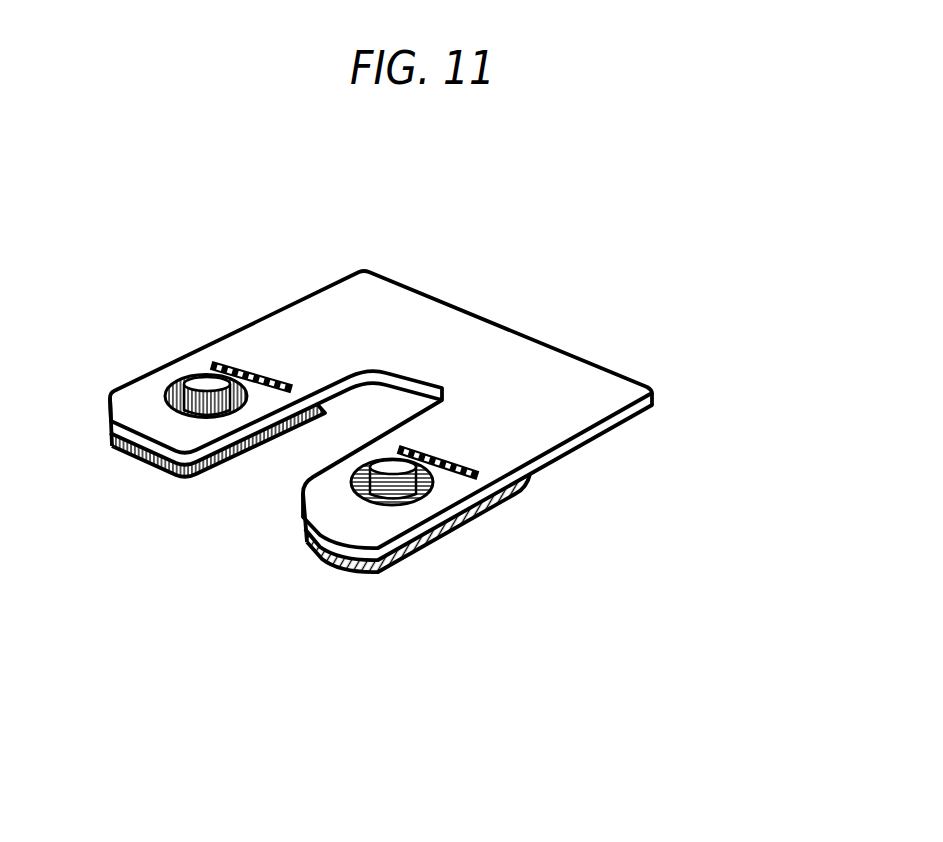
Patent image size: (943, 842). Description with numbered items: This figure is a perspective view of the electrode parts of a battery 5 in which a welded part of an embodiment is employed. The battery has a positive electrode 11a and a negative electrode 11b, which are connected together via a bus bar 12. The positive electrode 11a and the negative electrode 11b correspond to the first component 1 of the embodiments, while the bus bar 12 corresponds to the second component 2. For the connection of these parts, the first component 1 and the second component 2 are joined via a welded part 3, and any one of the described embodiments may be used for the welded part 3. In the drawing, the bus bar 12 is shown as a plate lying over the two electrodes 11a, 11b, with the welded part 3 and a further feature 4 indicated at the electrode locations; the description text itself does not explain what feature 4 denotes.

The battery 5 is at (128, 145).
The first component 1 is at (287, 590).
The second component 2 is at (466, 415).
The welded part 3 is at (227, 363).
The engaging projection 4 is at (397, 452).
The positive electrode 11a is at (140, 471).
The negative electrode 11b is at (372, 569).
The bus bar 12 is at (500, 372).